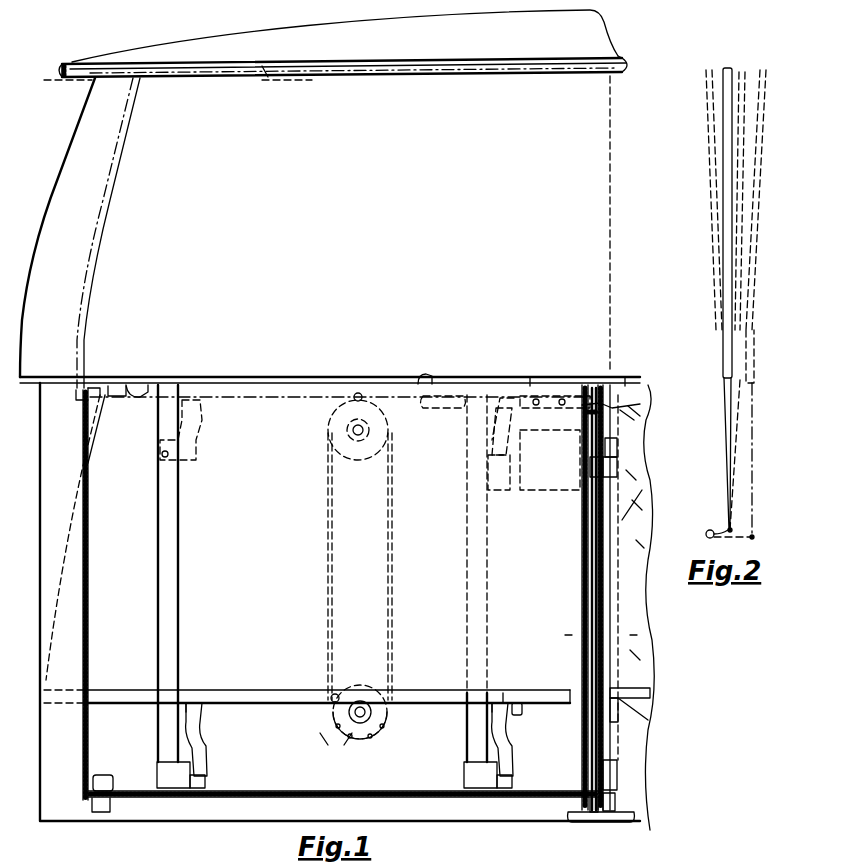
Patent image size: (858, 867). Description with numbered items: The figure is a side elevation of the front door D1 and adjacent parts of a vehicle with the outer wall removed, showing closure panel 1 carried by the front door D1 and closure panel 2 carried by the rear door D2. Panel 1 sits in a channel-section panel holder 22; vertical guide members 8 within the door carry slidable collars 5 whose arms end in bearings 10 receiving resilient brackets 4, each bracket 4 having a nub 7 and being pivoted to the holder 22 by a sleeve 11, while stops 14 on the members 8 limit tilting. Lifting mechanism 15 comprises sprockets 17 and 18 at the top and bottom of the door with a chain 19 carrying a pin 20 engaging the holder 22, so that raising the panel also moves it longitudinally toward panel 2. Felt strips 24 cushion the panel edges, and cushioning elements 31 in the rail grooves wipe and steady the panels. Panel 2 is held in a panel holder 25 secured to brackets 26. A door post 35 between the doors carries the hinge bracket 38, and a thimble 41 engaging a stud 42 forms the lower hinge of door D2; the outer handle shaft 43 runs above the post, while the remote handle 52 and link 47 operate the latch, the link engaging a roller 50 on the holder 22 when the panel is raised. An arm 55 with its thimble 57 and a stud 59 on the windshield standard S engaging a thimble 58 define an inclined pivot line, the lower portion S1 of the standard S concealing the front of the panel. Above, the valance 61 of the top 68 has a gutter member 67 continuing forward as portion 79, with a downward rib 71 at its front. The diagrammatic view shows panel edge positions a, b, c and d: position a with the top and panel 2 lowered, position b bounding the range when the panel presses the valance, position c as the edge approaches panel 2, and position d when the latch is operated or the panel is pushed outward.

In FIG. 1, the closure panel 1 is at (612, 258).
In FIG. 1, the closure panel 2 is at (650, 562).
In FIG. 1, the resilient bracket 4 is at (206, 742).
In FIG. 1, the collar 5 is at (157, 776).
In FIG. 1, the nub 7 is at (456, 382).
In FIG. 1, the vertical guide member 8 is at (158, 718).
In FIG. 1, the bearing 10 is at (198, 784).
In FIG. 1, the sleeve 11 is at (198, 716).
In FIG. 1, the stop 14 is at (162, 454).
In FIG. 1, the lifting mechanism 15 is at (59, 90).
In FIG. 1, the sprocket 17 is at (386, 448).
In FIG. 1, the sprocket 18 is at (392, 716).
In FIG. 1, the chain 19 is at (340, 748).
In FIG. 1, the pin 20 is at (354, 390).
In FIG. 1, the panel holder 22 is at (306, 706).
In FIG. 1, the strip 24 is at (582, 710).
In FIG. 1, the panel holder 25 is at (650, 694).
In FIG. 1, the bracket 26 is at (620, 712).
In FIG. 1, the cushioning element 31 is at (84, 385).
In FIG. 1, the door post 35 is at (588, 808).
In FIG. 1, the hinge bracket 38 is at (616, 466).
In FIG. 1, the thimble 41 is at (618, 780).
In FIG. 1, the stud 42 is at (616, 802).
In FIG. 1, the shaft 43 is at (640, 404).
In FIG. 1, the link 47 is at (496, 394).
In FIG. 1, the roller 50 is at (520, 712).
In FIG. 1, the remote door latch handle 52 is at (420, 376).
In FIG. 1, the arm 55 is at (116, 386).
In FIG. 1, the thimble 57 is at (150, 388).
In FIG. 1, the thimble 58 is at (104, 775).
In FIG. 1, the stud 59 is at (112, 806).
In FIG. 1, the valance 61 is at (628, 66).
In FIG. 1, the gutter member 67 is at (480, 60).
In FIG. 1, the top 68 is at (343, 43).
In FIG. 1, the rib 71 is at (60, 70).
In FIG. 1, the gutter front portion 79 is at (60, 68).
In FIG. 1, the windshield standard S is at (57, 220).
In FIG. 1, the lower portion of windshield standard S1 is at (40, 545).
In FIG. 1, the front door D1 is at (292, 796).
In FIG. 1, the rear door D2 is at (650, 762).
In FIG. 2, the panel position a is at (708, 70).
In FIG. 2, the panel position b is at (728, 66).
In FIG. 2, the panel position c is at (742, 72).
In FIG. 2, the panel position d is at (762, 70).